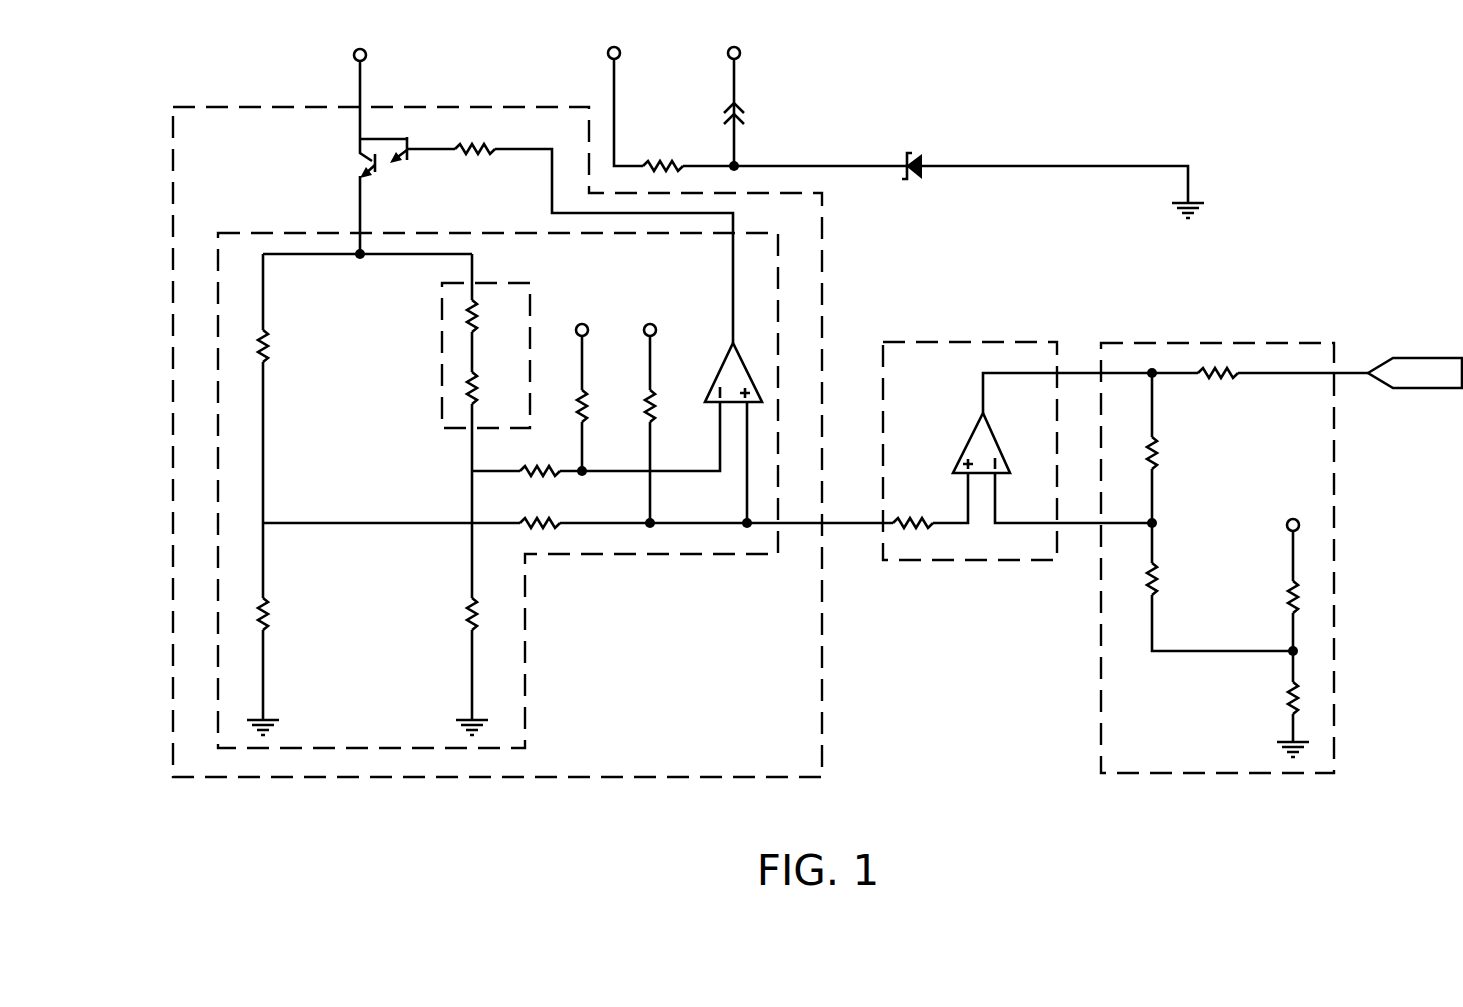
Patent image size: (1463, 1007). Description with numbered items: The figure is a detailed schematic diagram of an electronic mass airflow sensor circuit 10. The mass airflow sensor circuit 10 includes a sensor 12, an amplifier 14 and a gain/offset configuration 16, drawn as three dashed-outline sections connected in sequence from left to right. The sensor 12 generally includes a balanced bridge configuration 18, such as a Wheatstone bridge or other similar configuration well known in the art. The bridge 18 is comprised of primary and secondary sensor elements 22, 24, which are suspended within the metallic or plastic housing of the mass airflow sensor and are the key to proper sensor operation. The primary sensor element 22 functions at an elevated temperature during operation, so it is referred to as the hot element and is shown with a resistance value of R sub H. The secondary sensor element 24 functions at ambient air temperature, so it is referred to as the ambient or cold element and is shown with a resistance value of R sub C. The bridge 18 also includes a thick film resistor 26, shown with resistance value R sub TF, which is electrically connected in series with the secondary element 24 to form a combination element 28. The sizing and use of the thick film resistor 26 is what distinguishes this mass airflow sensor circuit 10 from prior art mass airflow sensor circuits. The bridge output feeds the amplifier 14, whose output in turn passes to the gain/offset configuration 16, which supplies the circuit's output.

The mass airflow sensor circuit 10 is at (1300, 152).
The sensor 12 is at (225, 106).
The amplifier 14 is at (975, 342).
The gain/offset configuration 16 is at (1220, 342).
The balanced bridge configuration 18 is at (410, 232).
The primary sensor element 22 is at (263, 362).
The secondary sensor element 24 is at (443, 318).
The thick film resistor 26 is at (444, 398).
The combination element 28 is at (442, 375).